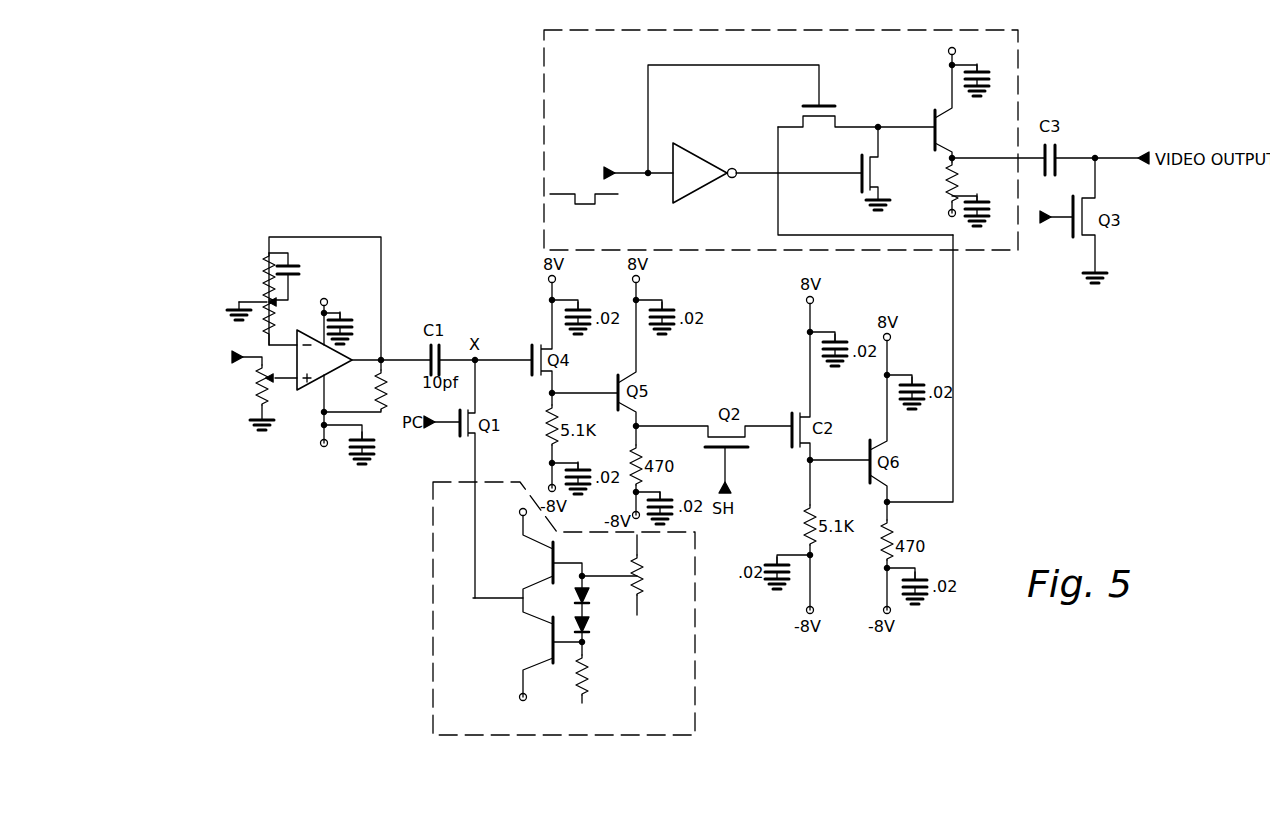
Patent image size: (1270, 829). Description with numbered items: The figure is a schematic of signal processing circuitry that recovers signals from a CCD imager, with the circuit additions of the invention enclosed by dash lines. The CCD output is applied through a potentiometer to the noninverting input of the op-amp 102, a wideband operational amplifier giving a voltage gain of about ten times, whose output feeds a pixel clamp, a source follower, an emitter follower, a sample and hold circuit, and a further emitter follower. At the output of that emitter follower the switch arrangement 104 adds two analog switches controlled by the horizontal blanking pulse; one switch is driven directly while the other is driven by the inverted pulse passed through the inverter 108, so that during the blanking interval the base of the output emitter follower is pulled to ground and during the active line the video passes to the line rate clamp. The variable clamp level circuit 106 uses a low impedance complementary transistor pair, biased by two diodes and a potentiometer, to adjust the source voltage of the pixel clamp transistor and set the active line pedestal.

The op-amp 102 is at (327, 374).
The switch arrangement 104 is at (782, 158).
The variable clamp level circuit 106 is at (695, 700).
The inverter 108 is at (703, 158).